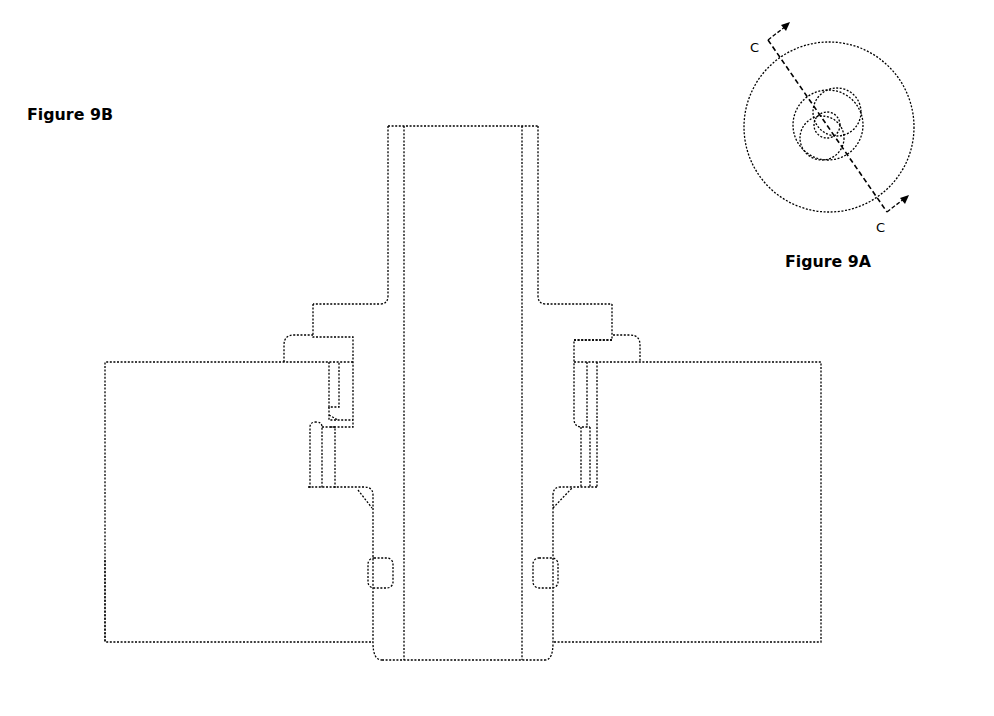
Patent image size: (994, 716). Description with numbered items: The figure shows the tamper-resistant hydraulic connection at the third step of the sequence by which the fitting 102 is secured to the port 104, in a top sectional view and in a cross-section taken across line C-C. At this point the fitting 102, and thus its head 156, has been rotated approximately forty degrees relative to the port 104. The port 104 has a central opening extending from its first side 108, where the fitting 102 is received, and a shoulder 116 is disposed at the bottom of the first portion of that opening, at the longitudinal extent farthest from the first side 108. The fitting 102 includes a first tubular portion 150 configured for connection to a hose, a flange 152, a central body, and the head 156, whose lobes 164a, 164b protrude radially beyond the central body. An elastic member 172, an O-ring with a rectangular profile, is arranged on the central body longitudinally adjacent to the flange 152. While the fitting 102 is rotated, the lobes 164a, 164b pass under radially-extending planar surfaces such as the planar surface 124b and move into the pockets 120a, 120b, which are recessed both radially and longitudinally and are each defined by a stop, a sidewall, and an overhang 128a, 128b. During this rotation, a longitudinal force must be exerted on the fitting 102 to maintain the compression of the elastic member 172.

In FIG. 9B, the fitting 102 is at (570, 270).
In FIG. 9B, the port 104 is at (127, 601).
In FIG. 9A, the port 104 is at (758, 117).
In FIG. 9B, the first side 108 is at (183, 362).
In FIG. 9B, the shoulder 116 is at (580, 488).
In FIG. 9A, the shoulder 116 is at (823, 157).
In FIG. 9B, the pocket 120a is at (582, 415).
In FIG. 9B, the pocket 120b is at (337, 416).
In FIG. 9B, the radially-extending planar surface 124b is at (313, 428).
In FIG. 9B, the overhang 128a is at (588, 395).
In FIG. 9B, the overhang 128b is at (333, 398).
In FIG. 9B, the first tubular portion 150 is at (388, 208).
In FIG. 9B, the flange 152 is at (588, 322).
In FIG. 9A, the head 156 is at (852, 138).
In FIG. 9B, the first lobe 164a is at (584, 460).
In FIG. 9B, the second lobe 164b is at (329, 458).
In FIG. 9B, the elastic member 172 is at (622, 351).